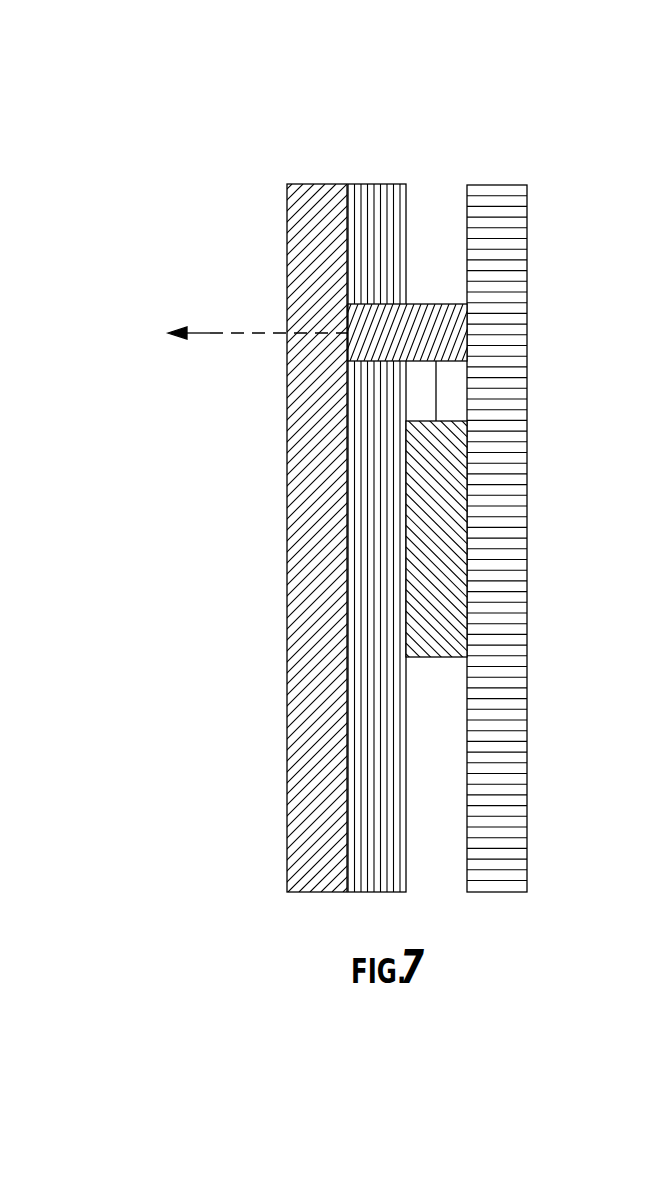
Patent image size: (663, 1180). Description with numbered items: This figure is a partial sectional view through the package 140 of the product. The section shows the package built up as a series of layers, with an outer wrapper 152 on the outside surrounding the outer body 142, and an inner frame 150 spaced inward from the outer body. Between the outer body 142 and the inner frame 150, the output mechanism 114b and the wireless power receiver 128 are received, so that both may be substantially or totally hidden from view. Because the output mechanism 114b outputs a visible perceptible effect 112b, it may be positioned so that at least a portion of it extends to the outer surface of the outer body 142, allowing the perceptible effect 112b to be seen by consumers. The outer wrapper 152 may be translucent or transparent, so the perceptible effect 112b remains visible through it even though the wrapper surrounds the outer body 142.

The package 140 is at (158, 73).
The outer wrapper 152 is at (323, 184).
The outer body 142 is at (385, 184).
The inner frame 150 is at (497, 185).
The output mechanism 114b is at (442, 313).
The wireless power receiver 128 is at (436, 658).
The perceptible effect 112b is at (240, 332).